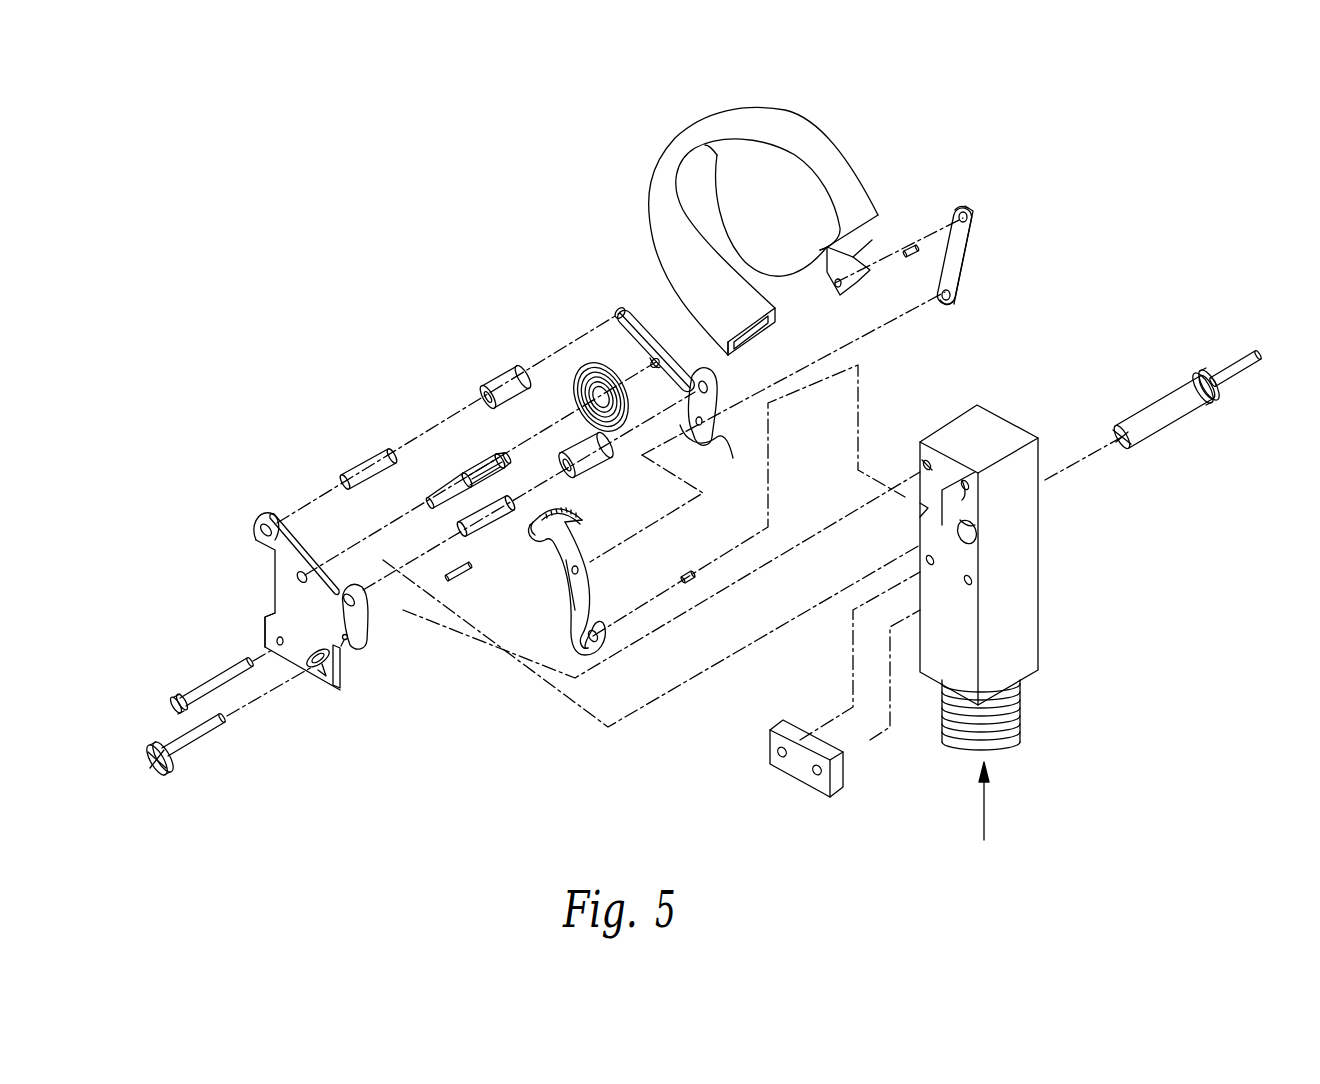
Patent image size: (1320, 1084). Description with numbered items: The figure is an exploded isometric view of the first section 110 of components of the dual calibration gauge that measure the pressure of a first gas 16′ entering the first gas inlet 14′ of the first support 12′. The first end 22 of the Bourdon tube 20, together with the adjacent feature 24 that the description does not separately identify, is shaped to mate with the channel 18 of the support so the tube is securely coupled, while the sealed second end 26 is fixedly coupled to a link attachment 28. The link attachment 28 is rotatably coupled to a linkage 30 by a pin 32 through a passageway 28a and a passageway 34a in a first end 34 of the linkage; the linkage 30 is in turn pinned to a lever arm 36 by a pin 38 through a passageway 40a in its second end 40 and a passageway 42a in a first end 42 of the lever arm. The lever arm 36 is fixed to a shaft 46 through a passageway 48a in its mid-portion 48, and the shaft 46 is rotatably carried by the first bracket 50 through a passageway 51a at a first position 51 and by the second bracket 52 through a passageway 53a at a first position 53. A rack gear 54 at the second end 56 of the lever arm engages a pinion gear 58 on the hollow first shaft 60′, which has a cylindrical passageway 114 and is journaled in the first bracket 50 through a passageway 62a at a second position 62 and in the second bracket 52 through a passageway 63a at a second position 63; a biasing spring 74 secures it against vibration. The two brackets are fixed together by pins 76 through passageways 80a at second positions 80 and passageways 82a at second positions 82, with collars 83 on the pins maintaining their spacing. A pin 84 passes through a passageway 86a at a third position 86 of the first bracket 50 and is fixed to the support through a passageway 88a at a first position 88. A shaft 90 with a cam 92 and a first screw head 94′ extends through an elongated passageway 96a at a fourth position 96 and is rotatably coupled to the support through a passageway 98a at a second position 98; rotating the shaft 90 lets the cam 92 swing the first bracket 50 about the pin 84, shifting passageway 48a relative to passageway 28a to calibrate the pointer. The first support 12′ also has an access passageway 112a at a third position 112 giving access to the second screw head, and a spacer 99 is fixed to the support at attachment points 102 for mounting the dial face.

The first section 110 is at (330, 262).
The Bourdon tube 20 is at (810, 125).
The first end 22 is at (734, 352).
The hook end face 24 is at (770, 330).
The sealed second end 26 is at (878, 206).
The link attachment 28 is at (866, 262).
The passageway 28a is at (834, 285).
The linkage 30 is at (977, 262).
The pin 32 is at (911, 257).
The first end 34 is at (962, 205).
The passageway 34a is at (972, 220).
The lever arm 36 is at (583, 548).
The pin 38 is at (688, 574).
The second end 40 is at (966, 297).
The passageway 40a is at (947, 303).
The first end 42 is at (598, 630).
The passageway 42a is at (596, 648).
The shaft 46 is at (462, 572).
The mid-portion 48 is at (566, 598).
The passageway 48a is at (580, 570).
The first bracket 50 is at (275, 585).
The first position 51 is at (343, 654).
The passageway 51a is at (352, 641).
The second bracket 52 is at (620, 303).
The first position 53 is at (690, 428).
The passageway 53a is at (720, 435).
The rack gear 54 is at (560, 510).
The second end 56 is at (538, 540).
The pinion gear 58 is at (484, 460).
The first shaft 60′ is at (430, 505).
The second position 62 is at (278, 560).
The passageway 62a is at (305, 562).
The second position 63 is at (648, 362).
The passageway 63a is at (656, 357).
The biasing spring 74 is at (578, 400).
The pins 76 is at (375, 462).
The second positions 80 is at (263, 522).
The passageways 80a is at (271, 518).
The second positions 82 is at (614, 318).
The passageways 82a is at (613, 308).
The collars 83 is at (500, 372).
The pin 84 is at (224, 678).
The third position 86 is at (277, 642).
The passageway 86a is at (268, 615).
The first position 88 is at (922, 466).
The passageway 88a is at (926, 460).
The shaft 90 is at (1260, 358).
The cam 92 is at (1216, 392).
The first screw head 94′ is at (152, 772).
The fourth position 96 is at (313, 672).
The elongated passageway 96a is at (328, 666).
The second position 98 is at (967, 500).
The passageway 98a is at (969, 486).
The spacer 99 is at (795, 733).
The attachment points 102 is at (935, 565).
The third position 112 is at (972, 530).
The access passageway 112a is at (972, 520).
The cylindrical passageway 114 is at (464, 478).
The first support 12′ is at (997, 410).
The first gas inlet 14′ is at (940, 720).
The first gas 16′ is at (988, 810).
The channel 18 is at (915, 505).